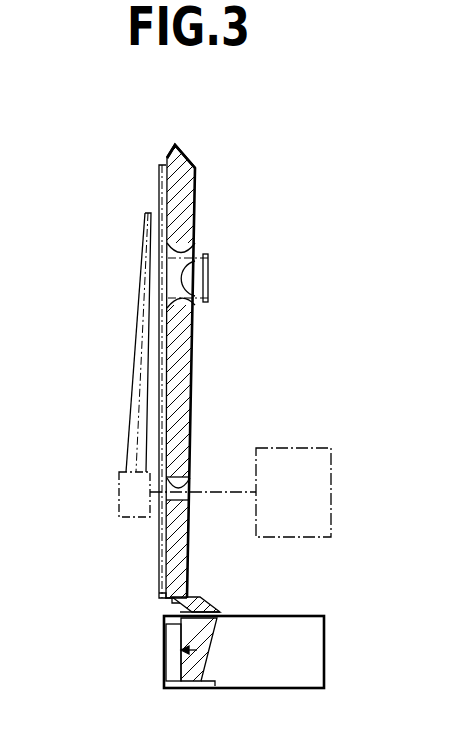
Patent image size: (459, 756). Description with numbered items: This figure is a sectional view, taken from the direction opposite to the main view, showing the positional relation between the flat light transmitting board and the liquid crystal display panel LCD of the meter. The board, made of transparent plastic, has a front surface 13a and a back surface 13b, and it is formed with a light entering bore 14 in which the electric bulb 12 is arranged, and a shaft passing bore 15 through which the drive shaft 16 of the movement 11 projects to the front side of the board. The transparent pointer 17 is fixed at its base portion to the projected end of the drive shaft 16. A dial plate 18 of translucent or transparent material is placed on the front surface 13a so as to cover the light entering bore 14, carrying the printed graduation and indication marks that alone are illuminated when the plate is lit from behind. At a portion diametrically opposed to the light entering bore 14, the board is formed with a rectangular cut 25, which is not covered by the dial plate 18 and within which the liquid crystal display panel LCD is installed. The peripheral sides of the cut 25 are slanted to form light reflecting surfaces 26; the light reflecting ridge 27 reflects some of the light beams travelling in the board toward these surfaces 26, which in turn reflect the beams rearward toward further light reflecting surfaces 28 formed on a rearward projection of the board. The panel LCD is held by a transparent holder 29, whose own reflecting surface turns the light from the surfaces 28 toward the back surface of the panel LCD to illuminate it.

The movement 11 is at (305, 462).
The electric bulb 12 is at (168, 292).
The front surface 13a is at (162, 380).
The back surface 13b is at (175, 145).
The light entering bore 14 is at (168, 250).
The shaft passing bore 15 is at (192, 486).
The drive shaft 16 is at (227, 492).
The transparent pointer 17 is at (135, 340).
The dial plate 18 is at (155, 421).
The rectangular cut 25 is at (220, 628).
The light reflecting surfaces 26 is at (170, 603).
The light reflecting ridge 27 is at (181, 156).
The light reflecting surfaces 28 is at (216, 604).
The transparent holder 29 is at (288, 688).
The liquid crystal display panel LCD is at (168, 668).